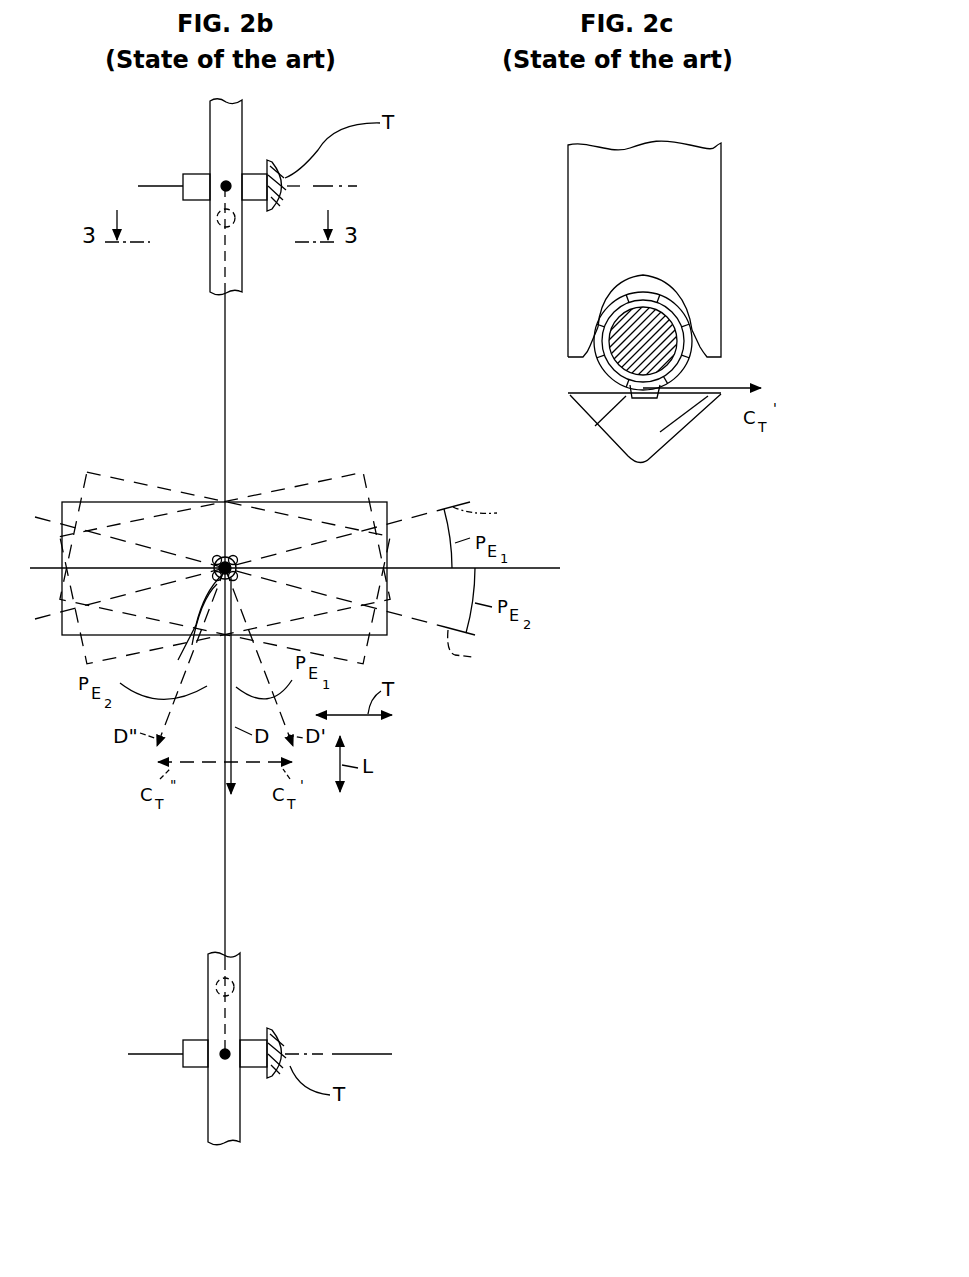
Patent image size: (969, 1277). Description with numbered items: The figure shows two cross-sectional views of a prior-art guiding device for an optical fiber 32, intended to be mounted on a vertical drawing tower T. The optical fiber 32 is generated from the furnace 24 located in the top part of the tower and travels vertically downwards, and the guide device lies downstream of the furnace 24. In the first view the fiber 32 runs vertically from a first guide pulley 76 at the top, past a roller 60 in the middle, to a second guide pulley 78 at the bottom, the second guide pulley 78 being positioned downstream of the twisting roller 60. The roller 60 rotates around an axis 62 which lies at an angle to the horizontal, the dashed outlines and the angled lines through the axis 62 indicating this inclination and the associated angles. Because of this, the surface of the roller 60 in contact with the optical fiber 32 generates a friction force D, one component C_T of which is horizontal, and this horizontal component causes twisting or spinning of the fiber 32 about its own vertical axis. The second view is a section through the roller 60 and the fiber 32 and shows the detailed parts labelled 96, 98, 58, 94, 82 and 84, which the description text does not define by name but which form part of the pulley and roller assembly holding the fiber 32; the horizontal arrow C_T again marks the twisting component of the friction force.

In FIG. 2b, the optical fiber 32 is at (225, 390).
In FIG. 2c, the optical fiber 32 is at (688, 363).
In FIG. 2b, the first guide pulley 76 is at (254, 147).
In FIG. 2c, the first guide pulley 76 is at (557, 322).
In FIG. 2b, the second guide pulley 78 is at (263, 989).
In FIG. 2b, the pivot axis 82 is at (353, 1050).
In FIG. 2b, the upper wire holder tongue 96 is at (210, 236).
In FIG. 2c, the upper wire holder tongue 96 is at (698, 292).
In FIG. 2b, the lower wire holder 98 is at (208, 986).
In FIG. 2b, the roller 60 is at (73, 496).
In FIG. 2c, the roller 60 is at (668, 432).
In FIG. 2b, the axis 62 is at (190, 537).
In FIG. 2b, the pivot bearing 58 is at (232, 556).
In FIG. 2b, the elastic tongue 94 is at (178, 660).
In FIG. 2c, the elastic tongue 94 is at (597, 425).
In FIG. 2b, the furnace 24 is at (278, 1030).
In FIG. 2c, the guide slot 84 is at (590, 350).